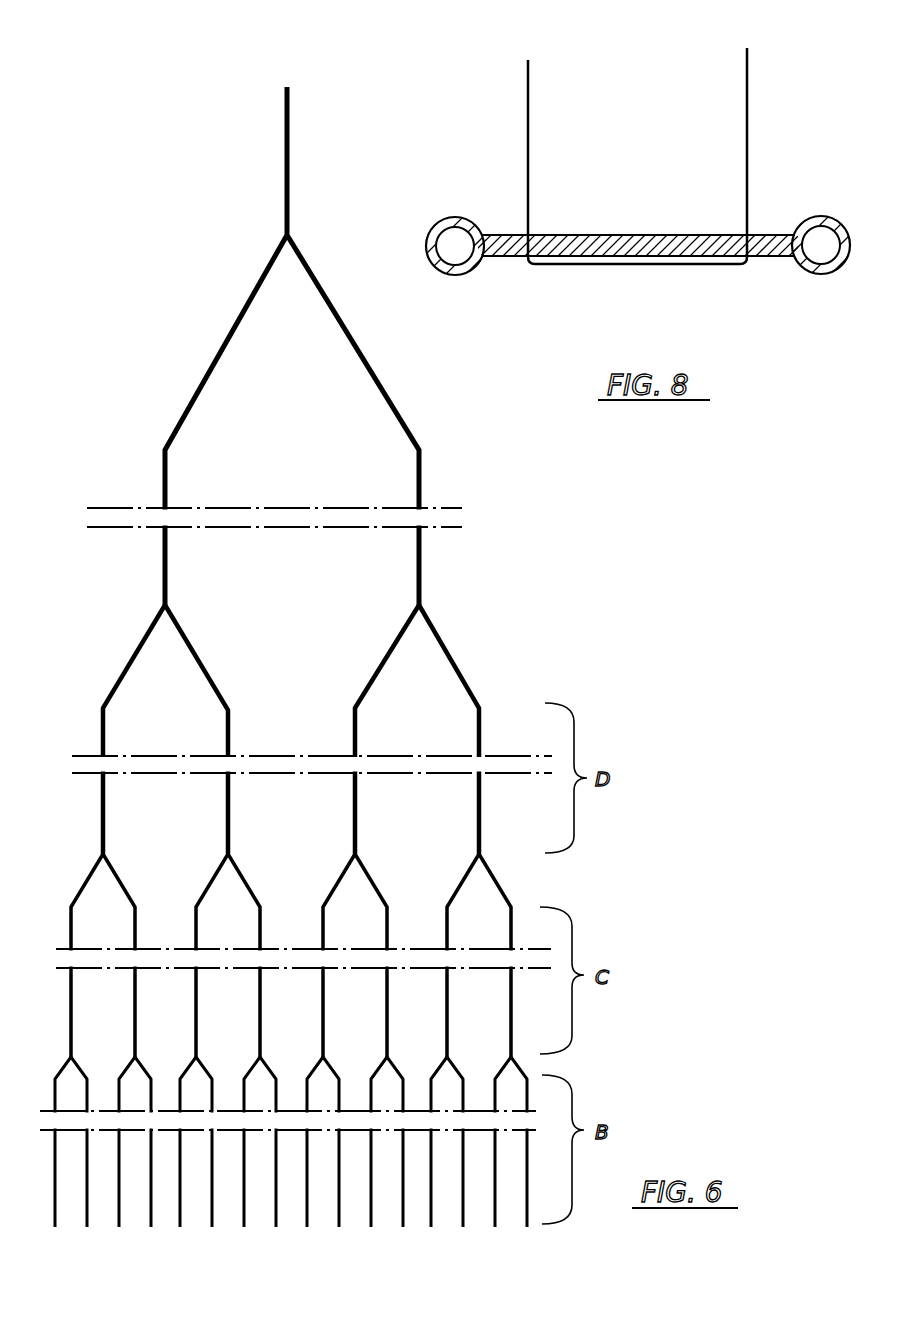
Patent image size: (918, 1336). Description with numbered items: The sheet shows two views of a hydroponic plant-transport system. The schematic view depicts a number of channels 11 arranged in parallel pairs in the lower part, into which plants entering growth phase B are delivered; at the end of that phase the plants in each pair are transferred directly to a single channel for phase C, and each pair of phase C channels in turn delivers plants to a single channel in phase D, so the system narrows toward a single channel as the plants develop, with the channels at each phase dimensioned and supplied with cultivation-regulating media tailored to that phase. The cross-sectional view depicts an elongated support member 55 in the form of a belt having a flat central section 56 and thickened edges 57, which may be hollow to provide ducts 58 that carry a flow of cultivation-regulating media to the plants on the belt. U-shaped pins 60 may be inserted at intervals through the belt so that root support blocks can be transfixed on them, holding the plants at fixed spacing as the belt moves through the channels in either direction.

In FIG. 6, the channels 11 is at (420, 562).
In FIG. 8, the elongated support member 55 is at (627, 234).
In FIG. 8, the flat central section 56 is at (640, 233).
In FIG. 8, the thickened edges 57 is at (430, 228).
In FIG. 8, the ducts 58 is at (458, 240).
In FIG. 8, the U-shaped pins 60 is at (745, 130).